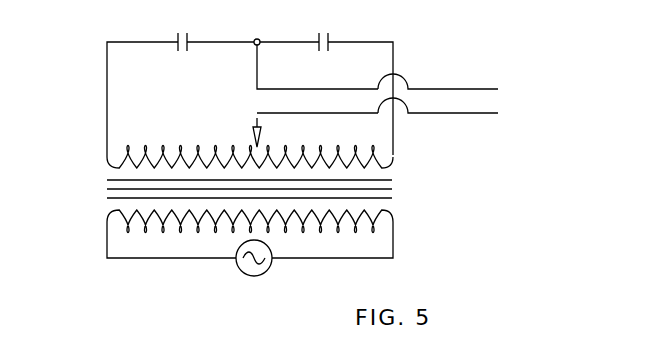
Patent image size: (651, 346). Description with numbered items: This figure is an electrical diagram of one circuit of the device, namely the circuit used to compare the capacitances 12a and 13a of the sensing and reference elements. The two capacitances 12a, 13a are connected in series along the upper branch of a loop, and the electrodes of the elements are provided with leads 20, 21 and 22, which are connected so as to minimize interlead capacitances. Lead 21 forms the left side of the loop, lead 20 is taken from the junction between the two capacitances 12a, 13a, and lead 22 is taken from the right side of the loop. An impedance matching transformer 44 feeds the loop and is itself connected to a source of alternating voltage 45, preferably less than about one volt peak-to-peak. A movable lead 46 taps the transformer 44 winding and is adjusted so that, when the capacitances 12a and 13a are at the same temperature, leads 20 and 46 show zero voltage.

The capacitance 12a is at (177, 39).
The capacitance 13a is at (329, 36).
The lead 20 is at (257, 68).
The lead 21 is at (107, 108).
The lead 22 is at (394, 60).
The impedance matching transformer 44 is at (407, 135).
The source of alternating voltage 45 is at (242, 271).
The movable lead 46 is at (256, 118).